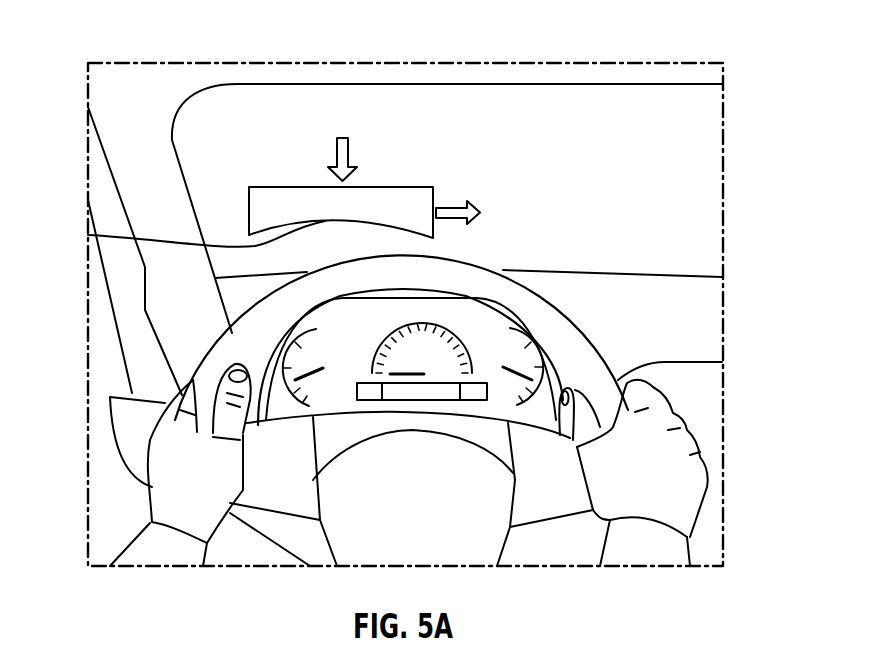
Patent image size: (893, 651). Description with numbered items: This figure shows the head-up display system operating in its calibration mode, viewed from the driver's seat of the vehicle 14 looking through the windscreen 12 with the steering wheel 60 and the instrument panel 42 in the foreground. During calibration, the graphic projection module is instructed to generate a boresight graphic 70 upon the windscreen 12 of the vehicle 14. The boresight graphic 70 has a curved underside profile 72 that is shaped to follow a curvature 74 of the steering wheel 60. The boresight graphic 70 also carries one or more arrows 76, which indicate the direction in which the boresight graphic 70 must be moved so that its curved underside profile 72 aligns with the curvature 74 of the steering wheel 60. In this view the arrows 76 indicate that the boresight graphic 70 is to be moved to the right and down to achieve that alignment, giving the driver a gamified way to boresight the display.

The windscreen 12 is at (518, 103).
The vehicle 14 is at (130, 90).
The instrument panel 42 is at (245, 343).
The steering wheel 60 is at (572, 318).
The boresight graphic 70 is at (368, 135).
The curved underside profile 72 is at (88, 235).
The curvature 74 is at (501, 270).
The arrows 76 is at (337, 146).